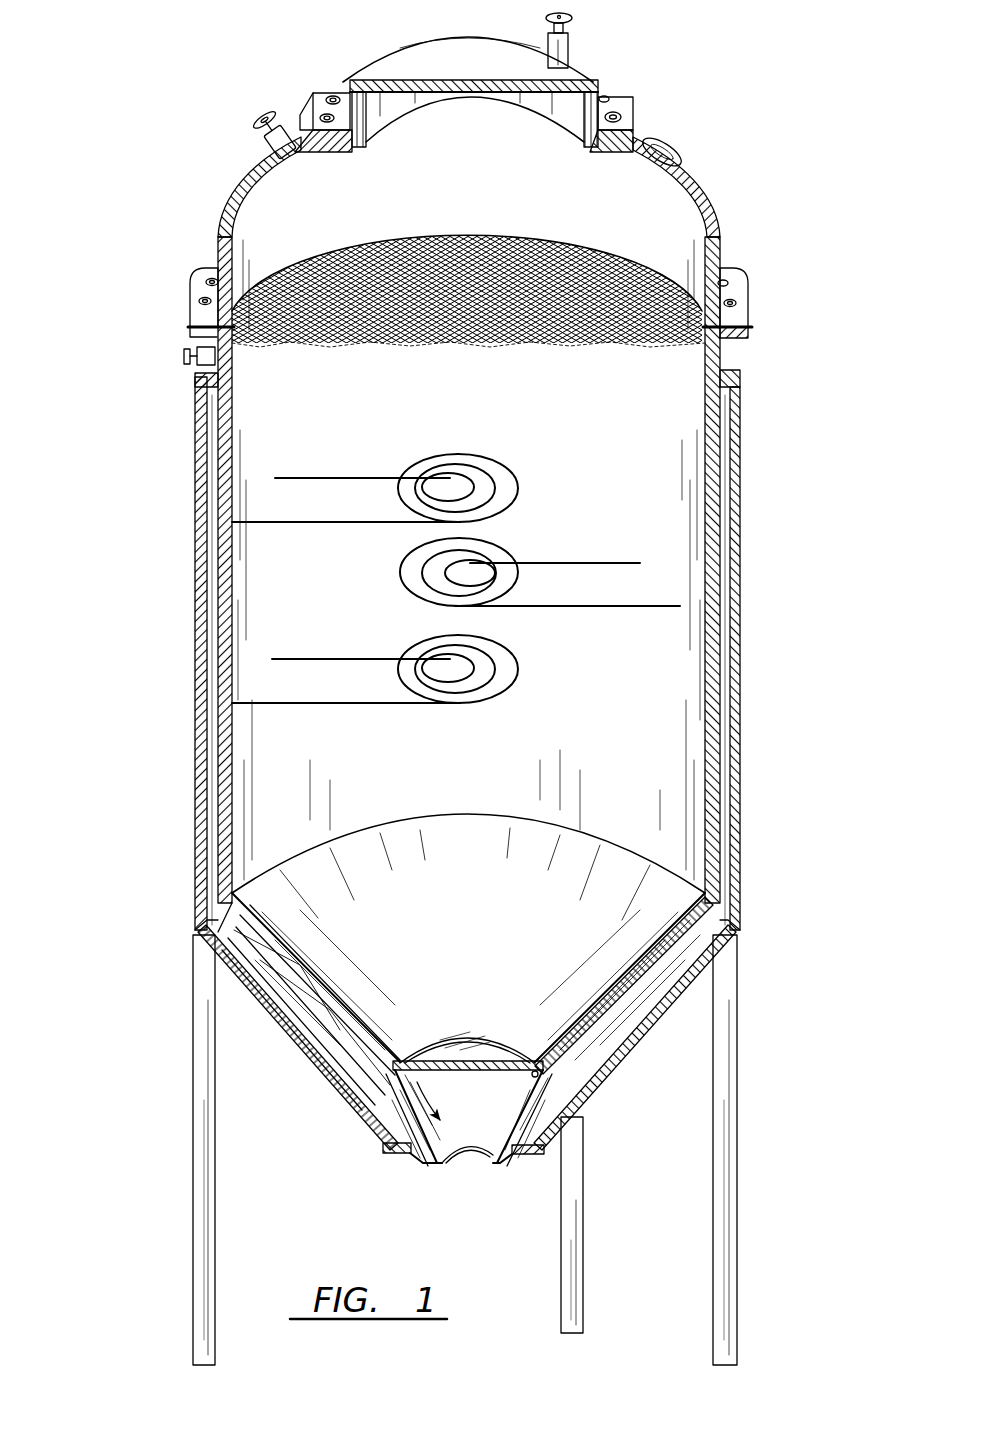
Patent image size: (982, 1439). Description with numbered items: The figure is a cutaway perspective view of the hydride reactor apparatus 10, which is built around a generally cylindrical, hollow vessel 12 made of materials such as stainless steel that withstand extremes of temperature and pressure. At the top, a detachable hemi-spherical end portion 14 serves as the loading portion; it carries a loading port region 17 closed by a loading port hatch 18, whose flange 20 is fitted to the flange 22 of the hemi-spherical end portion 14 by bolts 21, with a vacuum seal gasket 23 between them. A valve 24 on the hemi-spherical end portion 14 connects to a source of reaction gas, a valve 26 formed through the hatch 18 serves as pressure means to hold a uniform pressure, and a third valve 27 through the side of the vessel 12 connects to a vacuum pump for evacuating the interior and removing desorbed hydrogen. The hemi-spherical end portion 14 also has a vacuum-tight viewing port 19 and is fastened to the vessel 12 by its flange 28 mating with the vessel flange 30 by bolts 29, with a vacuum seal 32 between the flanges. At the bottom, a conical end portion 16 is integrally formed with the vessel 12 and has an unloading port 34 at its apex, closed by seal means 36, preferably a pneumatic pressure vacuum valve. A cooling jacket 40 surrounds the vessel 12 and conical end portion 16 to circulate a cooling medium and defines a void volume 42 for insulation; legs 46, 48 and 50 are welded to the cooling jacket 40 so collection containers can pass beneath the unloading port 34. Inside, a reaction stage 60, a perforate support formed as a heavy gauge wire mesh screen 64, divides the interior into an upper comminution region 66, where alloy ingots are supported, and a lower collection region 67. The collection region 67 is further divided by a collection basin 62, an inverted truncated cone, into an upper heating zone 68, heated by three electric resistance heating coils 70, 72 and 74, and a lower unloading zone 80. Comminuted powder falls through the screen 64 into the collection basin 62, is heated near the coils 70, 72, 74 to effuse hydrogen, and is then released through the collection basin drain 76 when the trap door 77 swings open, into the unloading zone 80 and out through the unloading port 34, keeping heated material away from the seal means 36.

The hydride reactor apparatus 10 is at (760, 100).
The vessel 12 is at (748, 370).
The hemi-spherical end portion 14 is at (709, 188).
The conical end portion 16 is at (425, 1160).
The loading port region 17 is at (637, 127).
The loading port hatch 18 is at (447, 64).
The viewing port 19 is at (672, 158).
The flange 20 is at (338, 92).
The bolts 21 is at (327, 112).
The flange 22 is at (300, 140).
The vacuum seal gasket 23 is at (315, 128).
The valve 24 is at (265, 142).
The valve 26 is at (572, 18).
The valve 27 is at (186, 356).
The flange 28 is at (750, 306).
The bolts 29 is at (210, 278).
The flange 30 is at (752, 336).
The vacuum seal 32 is at (752, 327).
The unloading port 34 is at (470, 1170).
The seal means 36 is at (455, 1165).
The cooling jacket 40 is at (198, 600).
The void volume 42 is at (217, 526).
The leg 46 is at (722, 1118).
The leg 48 is at (196, 1140).
The leg 50 is at (578, 1212).
The reaction stage 60 is at (545, 318).
The collection basin 62 is at (668, 952).
The wire mesh screen 64 is at (285, 350).
The comminution region 66 is at (492, 206).
The collection region 67 is at (580, 430).
The heating zone 68 is at (630, 670).
The electric resistance heating coil 70 is at (383, 478).
The electric resistance heating coil 72 is at (562, 560).
The electric resistance heating coil 74 is at (388, 660).
The collection basin drain 76 is at (430, 1040).
The trap door 77 is at (500, 1048).
The unloading zone 80 is at (386, 1078).